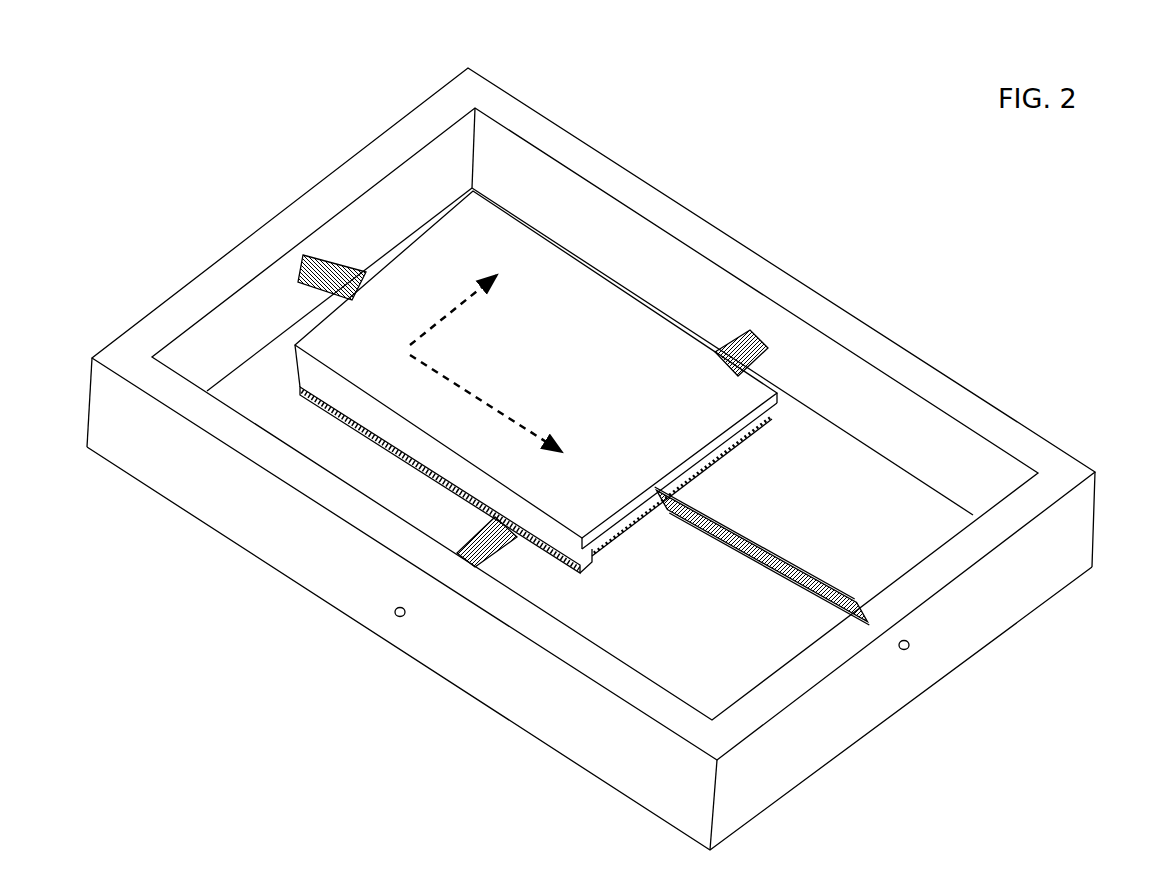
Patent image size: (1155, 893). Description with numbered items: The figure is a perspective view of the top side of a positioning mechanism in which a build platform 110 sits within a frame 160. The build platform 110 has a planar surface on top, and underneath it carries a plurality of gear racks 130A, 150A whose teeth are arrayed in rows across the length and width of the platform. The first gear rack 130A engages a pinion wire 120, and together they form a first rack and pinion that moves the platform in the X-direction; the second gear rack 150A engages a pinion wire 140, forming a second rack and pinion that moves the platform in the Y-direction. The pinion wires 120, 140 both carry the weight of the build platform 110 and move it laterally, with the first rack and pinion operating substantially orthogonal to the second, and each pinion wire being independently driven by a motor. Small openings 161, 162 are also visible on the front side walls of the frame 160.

The build platform 110 is at (574, 388).
The pinion wire 120 is at (509, 554).
The first gear rack 130A is at (387, 452).
The pinion wire 140 is at (750, 512).
The second gear rack 150A is at (627, 536).
The frame 160 is at (952, 375).
The first hole 161 is at (398, 620).
The second hole 162 is at (911, 653).